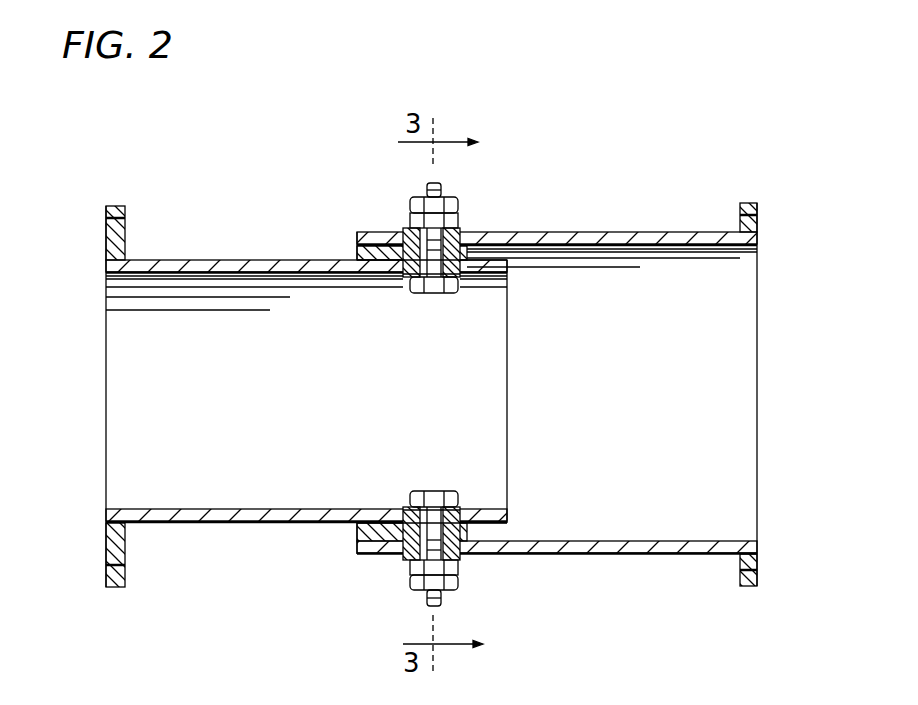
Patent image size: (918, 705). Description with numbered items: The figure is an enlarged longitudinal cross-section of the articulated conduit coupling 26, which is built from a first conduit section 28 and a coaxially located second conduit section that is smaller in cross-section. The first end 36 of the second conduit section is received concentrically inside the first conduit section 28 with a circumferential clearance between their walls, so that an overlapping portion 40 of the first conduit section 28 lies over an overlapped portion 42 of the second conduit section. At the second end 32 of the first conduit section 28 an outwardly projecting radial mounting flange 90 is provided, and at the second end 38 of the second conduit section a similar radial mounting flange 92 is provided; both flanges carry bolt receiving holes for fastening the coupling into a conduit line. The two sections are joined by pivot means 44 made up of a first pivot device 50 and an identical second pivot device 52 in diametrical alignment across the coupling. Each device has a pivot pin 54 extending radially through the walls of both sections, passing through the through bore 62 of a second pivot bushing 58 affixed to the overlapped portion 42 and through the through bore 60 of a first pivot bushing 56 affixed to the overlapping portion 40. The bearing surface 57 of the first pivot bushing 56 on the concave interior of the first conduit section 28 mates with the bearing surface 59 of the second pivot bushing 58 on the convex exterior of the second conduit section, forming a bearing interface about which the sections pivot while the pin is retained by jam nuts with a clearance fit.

The articulated conduit coupling 26 is at (588, 336).
The first conduit section 28 is at (634, 232).
The second end 32 is at (760, 280).
The first end 36 is at (512, 289).
The second end 38 is at (106, 336).
The overlapping portion 40 is at (333, 379).
The overlapped portion 42 is at (488, 512).
The pivot means 44 is at (435, 141).
The first pivot device 50 is at (410, 180).
The second pivot device 52 is at (382, 597).
The pivot pin 54 is at (440, 186).
The first pivot bushing 56 is at (408, 235).
The bearing surface 57 is at (413, 294).
The second pivot bushing 58 is at (408, 268).
The bearing surface 59 is at (462, 264).
The through bore 60 is at (458, 242).
The through bore 62 is at (435, 292).
The radial mounting flange 90 is at (746, 207).
The radial mounting flange 92 is at (116, 206).